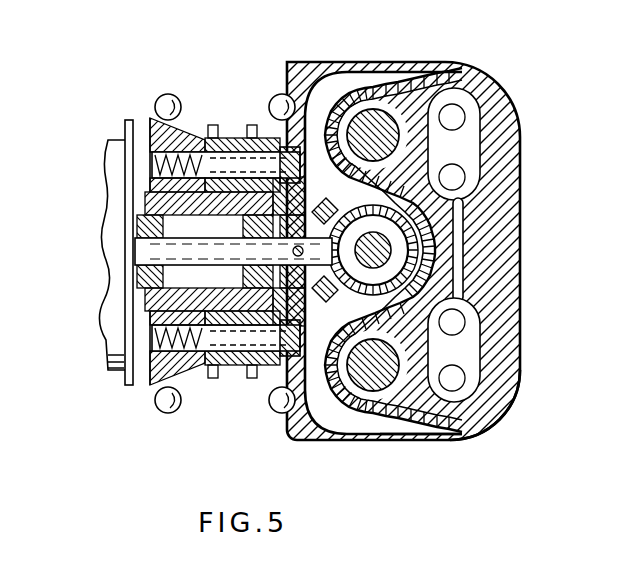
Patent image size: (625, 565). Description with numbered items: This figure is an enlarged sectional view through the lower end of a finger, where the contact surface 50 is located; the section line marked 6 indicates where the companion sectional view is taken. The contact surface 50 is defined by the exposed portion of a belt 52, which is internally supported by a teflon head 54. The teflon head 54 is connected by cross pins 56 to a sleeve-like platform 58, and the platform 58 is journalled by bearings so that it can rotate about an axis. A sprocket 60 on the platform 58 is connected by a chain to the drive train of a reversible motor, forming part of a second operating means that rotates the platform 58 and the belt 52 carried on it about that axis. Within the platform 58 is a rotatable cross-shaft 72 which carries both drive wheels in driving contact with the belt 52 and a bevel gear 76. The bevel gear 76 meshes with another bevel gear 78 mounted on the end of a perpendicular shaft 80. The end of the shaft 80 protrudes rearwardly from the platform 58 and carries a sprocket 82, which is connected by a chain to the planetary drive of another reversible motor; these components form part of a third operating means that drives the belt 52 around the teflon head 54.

The contact surface 50 is at (520, 143).
The belt 52 is at (493, 423).
The teflon head 54 is at (405, 438).
The cross pins 56 is at (386, 63).
The platform 58 is at (313, 63).
The sprocket 60 is at (236, 368).
The cross-shaft 72 is at (358, 240).
The bevel gear 76 is at (497, 212).
The bevel gear 78 is at (341, 300).
The perpendicular shaft 80 is at (221, 252).
The sprocket 82 is at (131, 123).
The section line 6- 6 is at (48, 240).